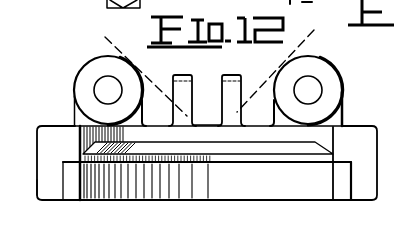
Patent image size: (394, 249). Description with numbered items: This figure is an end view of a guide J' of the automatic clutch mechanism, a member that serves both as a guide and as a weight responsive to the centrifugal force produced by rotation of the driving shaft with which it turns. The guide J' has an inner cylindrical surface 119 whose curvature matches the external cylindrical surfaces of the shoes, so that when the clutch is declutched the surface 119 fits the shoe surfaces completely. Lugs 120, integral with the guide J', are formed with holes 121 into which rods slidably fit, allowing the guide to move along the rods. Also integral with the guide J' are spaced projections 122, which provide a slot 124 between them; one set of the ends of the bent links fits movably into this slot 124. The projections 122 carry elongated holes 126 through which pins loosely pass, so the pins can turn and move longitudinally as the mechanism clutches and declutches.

The inner cylindrical surface 119 is at (225, 188).
The lug 120 is at (88, 85).
The hole 121 is at (100, 88).
The spaced projection 122 is at (182, 88).
The slot 124 is at (200, 98).
The elongated hole 126 is at (203, 71).
The guide J' is at (26, 200).